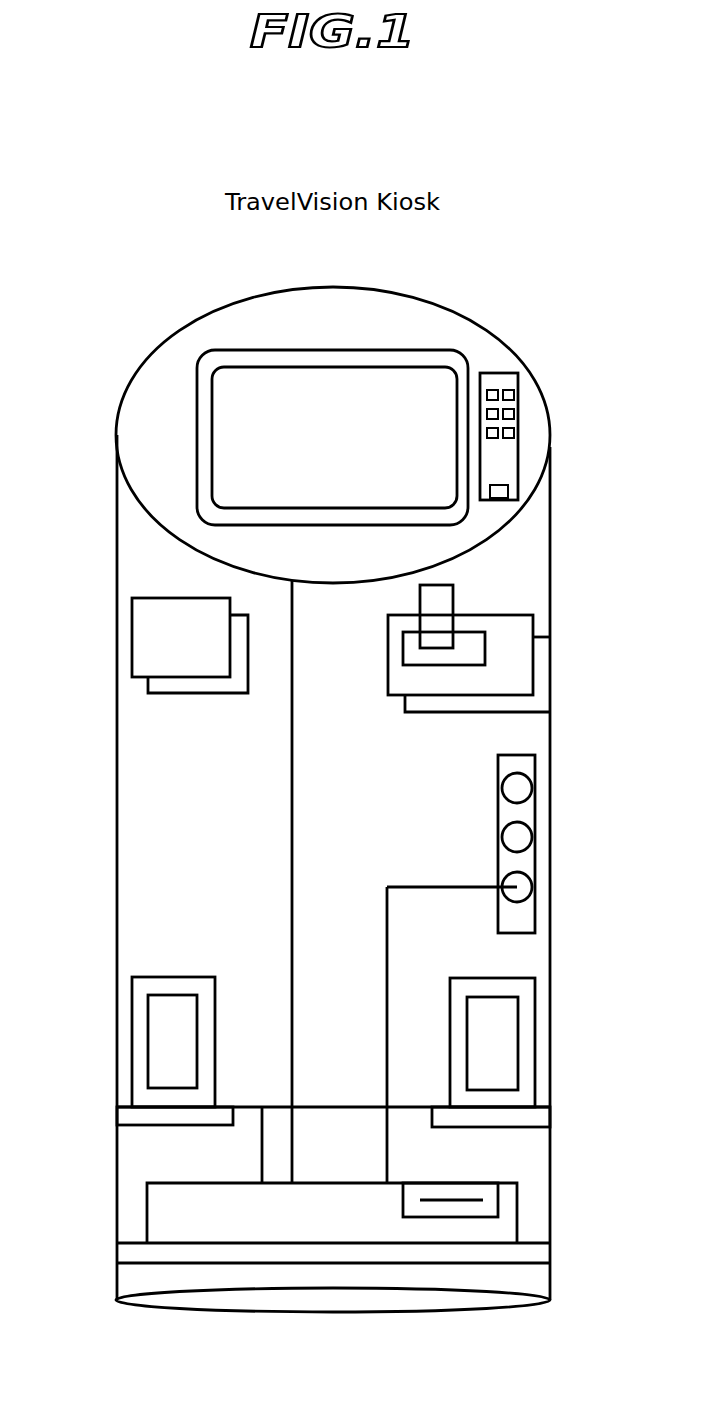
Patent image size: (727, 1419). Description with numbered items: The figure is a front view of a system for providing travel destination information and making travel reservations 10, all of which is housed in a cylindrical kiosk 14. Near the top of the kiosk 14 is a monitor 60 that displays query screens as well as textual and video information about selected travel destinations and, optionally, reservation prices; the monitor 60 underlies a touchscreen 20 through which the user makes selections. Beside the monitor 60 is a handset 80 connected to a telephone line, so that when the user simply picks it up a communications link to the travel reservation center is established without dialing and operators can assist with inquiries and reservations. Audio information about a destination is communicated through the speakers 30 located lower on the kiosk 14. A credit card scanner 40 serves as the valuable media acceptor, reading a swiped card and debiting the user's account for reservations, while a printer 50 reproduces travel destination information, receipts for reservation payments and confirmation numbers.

The system for providing travel destination information and making travel reservatio 10 is at (320, 1312).
The cylindrical kiosk 14 is at (117, 890).
The touchscreen 20 is at (373, 350).
The speakers 30 is at (130, 1018).
The credit card scanner 40 is at (155, 598).
The printer 50 is at (513, 615).
The monitor 60 is at (262, 385).
The handset 80 is at (518, 460).